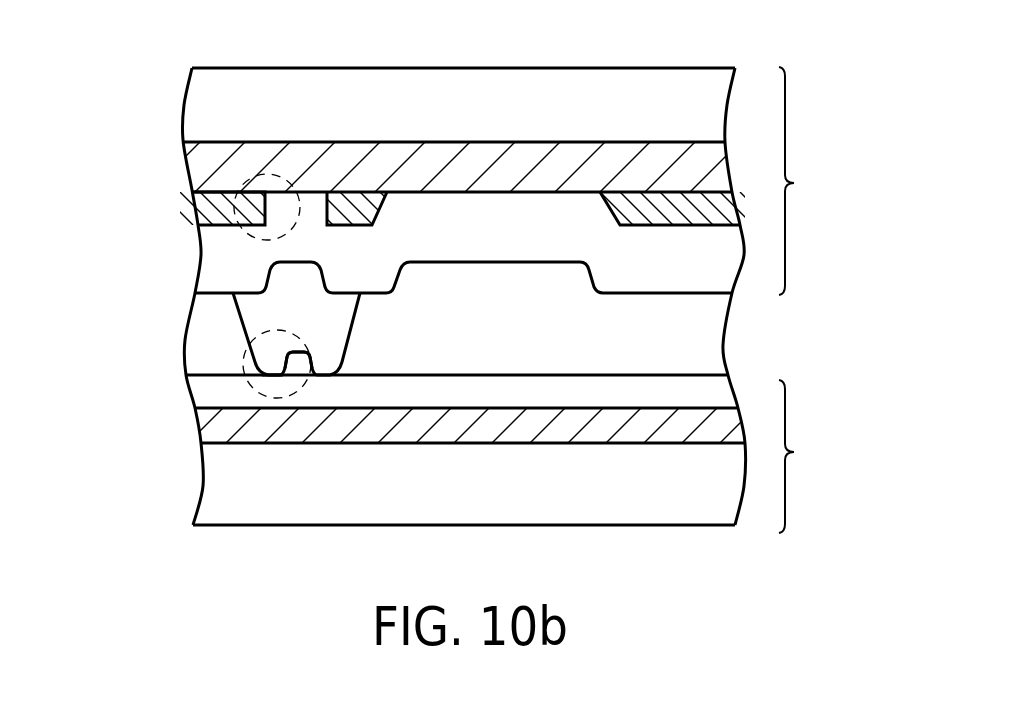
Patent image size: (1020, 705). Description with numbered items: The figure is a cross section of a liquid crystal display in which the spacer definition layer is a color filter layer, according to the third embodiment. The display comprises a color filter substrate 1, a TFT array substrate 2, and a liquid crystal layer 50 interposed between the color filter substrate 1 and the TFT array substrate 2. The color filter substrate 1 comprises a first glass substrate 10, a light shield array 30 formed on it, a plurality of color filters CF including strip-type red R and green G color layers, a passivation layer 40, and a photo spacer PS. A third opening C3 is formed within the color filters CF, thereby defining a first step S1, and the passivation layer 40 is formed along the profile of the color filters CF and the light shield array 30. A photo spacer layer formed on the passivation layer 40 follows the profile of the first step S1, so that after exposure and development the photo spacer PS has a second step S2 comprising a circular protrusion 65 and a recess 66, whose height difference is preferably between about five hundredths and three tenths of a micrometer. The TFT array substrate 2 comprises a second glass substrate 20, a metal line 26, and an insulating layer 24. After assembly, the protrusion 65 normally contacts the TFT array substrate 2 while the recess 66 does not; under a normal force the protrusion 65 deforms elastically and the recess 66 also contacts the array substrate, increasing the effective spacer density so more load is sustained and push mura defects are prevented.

The first glass substrate 10 is at (207, 99).
The light shield array 30 is at (205, 160).
The color filters CF is at (197, 208).
The red color layer R is at (353, 213).
The green color layer G is at (658, 205).
The third opening C3 is at (313, 212).
The first step S1 is at (266, 175).
The passivation layer 40 is at (212, 268).
The photo spacer PS is at (258, 316).
The liquid crystal layer 50 is at (205, 340).
The insulating layer 24 is at (213, 395).
The metal line 26 is at (213, 428).
The second glass substrate 20 is at (215, 486).
The protrusion 65 is at (265, 375).
The recess 66 is at (298, 352).
The second step S2 is at (278, 402).
The color filter substrate 1 is at (803, 181).
The TFT array substrate 2 is at (802, 456).